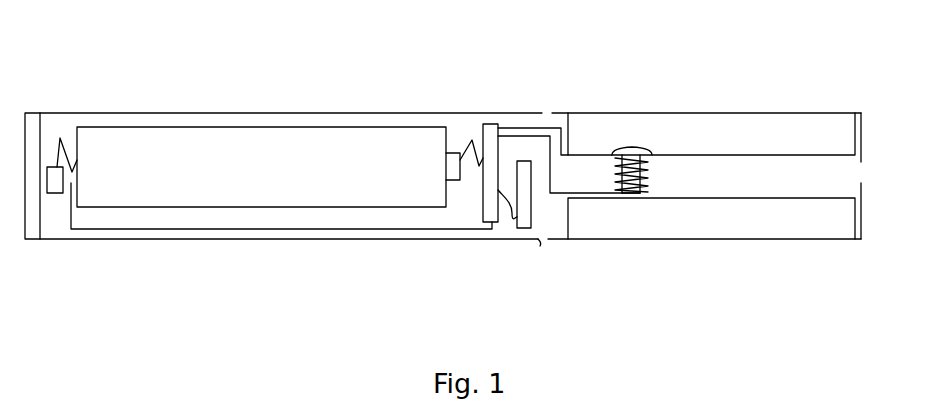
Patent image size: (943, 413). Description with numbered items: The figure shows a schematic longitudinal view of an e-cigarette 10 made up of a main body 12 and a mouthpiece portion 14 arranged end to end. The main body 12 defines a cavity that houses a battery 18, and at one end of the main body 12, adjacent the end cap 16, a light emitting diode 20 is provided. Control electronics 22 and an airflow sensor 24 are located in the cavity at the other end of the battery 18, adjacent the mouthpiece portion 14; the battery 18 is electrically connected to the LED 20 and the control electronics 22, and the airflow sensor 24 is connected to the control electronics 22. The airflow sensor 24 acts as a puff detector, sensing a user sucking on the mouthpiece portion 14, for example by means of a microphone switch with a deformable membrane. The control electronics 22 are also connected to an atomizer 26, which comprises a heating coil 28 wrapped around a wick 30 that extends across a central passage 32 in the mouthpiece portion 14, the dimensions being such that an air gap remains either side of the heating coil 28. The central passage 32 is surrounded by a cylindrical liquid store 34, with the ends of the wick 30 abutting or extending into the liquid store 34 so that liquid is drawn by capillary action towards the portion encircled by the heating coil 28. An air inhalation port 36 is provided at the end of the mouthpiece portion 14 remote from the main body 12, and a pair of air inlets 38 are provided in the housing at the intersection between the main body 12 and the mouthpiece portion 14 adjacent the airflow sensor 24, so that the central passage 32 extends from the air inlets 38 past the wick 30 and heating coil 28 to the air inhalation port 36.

The e-cigarette 10 is at (196, 57).
The main body 12 is at (543, 103).
The mouthpiece portion 14 is at (858, 102).
The end cap 16 is at (32, 236).
The battery 18 is at (192, 195).
The light emitting diode (LED) 20 is at (58, 193).
The control electronics 22 is at (490, 124).
The airflow sensor 24 is at (520, 224).
The atomizer 26 is at (630, 147).
The heating coil 28 is at (653, 162).
The wick 30 is at (628, 194).
The central passage 32 is at (697, 177).
The liquid store 34 is at (800, 120).
The air inhalation port 36 is at (862, 177).
The air inlets 38 is at (545, 113).